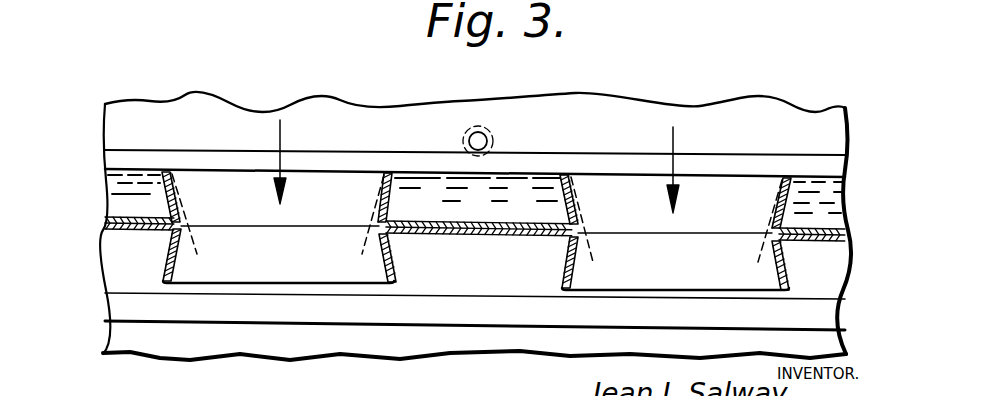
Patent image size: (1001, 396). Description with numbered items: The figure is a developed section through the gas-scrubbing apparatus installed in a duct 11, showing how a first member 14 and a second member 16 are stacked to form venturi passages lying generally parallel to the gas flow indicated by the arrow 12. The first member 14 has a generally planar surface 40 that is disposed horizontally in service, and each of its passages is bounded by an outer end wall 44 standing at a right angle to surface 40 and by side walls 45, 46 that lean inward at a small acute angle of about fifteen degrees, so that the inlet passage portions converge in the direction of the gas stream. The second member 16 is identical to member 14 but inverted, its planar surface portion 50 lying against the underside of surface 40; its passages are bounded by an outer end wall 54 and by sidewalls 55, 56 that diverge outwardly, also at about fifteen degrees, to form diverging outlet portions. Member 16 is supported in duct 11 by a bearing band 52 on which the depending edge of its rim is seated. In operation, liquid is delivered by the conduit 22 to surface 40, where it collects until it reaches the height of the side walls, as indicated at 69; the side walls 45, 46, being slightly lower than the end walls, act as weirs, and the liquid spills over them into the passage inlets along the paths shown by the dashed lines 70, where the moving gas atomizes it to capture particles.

The duct 11 is at (830, 113).
The arrow 12 is at (285, 122).
The first member 14 is at (228, 169).
The second member 16 is at (223, 284).
The liquid distributing conduit 22 is at (480, 125).
The generally planar surface 40 is at (495, 220).
The outer end wall 44 is at (310, 178).
The side wall 45 is at (176, 203).
The side wall 46 is at (383, 195).
The generally planar surface portion 50 is at (443, 238).
The bearing band 52 is at (367, 316).
The outer end wall 54 is at (288, 270).
The sidewall 55 is at (167, 262).
The sidewall 56 is at (388, 267).
The liquid level 69 is at (140, 170).
The dashed lines 70 is at (794, 176).